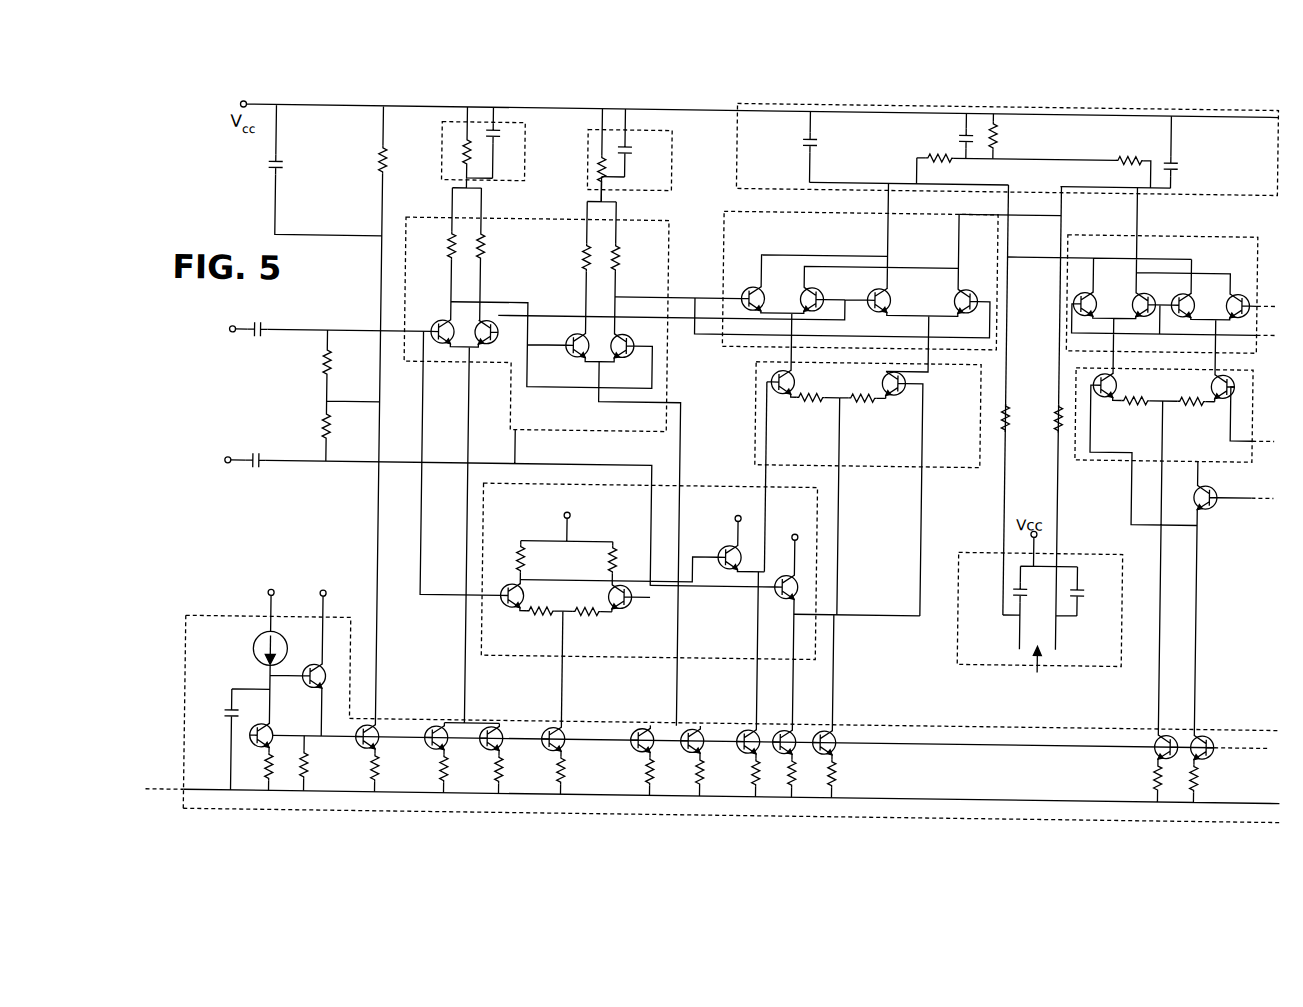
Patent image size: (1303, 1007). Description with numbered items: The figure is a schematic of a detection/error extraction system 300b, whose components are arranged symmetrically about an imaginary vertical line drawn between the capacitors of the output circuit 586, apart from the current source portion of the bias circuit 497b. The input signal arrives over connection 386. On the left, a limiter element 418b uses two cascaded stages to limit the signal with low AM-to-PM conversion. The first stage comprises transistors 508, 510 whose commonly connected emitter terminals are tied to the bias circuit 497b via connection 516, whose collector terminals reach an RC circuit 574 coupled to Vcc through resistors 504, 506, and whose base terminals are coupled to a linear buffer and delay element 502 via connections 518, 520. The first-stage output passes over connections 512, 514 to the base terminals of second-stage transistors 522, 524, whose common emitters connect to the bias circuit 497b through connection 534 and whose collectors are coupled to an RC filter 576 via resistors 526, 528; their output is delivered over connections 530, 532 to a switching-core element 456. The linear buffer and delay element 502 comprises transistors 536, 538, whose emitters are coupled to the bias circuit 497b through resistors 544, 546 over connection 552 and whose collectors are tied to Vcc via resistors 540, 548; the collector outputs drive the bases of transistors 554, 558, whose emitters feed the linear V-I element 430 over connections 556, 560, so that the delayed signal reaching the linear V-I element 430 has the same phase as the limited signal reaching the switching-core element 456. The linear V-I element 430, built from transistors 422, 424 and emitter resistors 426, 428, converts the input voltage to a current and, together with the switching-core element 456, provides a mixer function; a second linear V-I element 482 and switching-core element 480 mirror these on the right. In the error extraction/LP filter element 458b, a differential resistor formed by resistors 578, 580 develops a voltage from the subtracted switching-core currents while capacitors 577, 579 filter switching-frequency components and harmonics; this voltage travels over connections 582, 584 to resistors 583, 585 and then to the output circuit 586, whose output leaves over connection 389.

The detection/error extraction system 300b is at (200, 141).
The connection 386 is at (255, 406).
The limiter element 418b is at (545, 273).
The resistor 504 is at (446, 243).
The resistor 506 is at (482, 243).
The transistor 508 is at (436, 323).
The transistor 510 is at (483, 323).
The connection 512 is at (528, 300).
The connection 514 is at (533, 330).
The connection 516 is at (466, 484).
The connection 518 is at (422, 430).
The connection 520 is at (514, 466).
The transistor 522 is at (563, 358).
The transistor 524 is at (617, 360).
The resistor 526 is at (590, 257).
The resistor 528 is at (620, 265).
The connection 530 is at (660, 298).
The connection 532 is at (673, 318).
The connection 534 is at (682, 452).
The RC circuit 574 is at (524, 164).
The RC filter 576 is at (670, 172).
The switching-core element 456 is at (874, 238).
The error extraction/LP filter element 458b is at (1262, 169).
The capacitor 577 is at (801, 133).
The resistor 578 is at (930, 155).
The capacitor 579 is at (1162, 153).
The resistor 580 is at (1119, 149).
The connection 582 is at (1006, 272).
The connection 584 is at (1056, 373).
The resistor 583 is at (1052, 420).
The resistor 585 is at (1010, 417).
The linear V-I element 430 is at (956, 453).
The transistor 422 is at (776, 370).
The transistor 424 is at (922, 378).
The resistor 426 is at (818, 403).
The resistor 428 is at (870, 405).
The linear buffer & delay element 502 is at (625, 510).
The resistor 540 is at (521, 570).
The resistor 548 is at (612, 563).
The transistor 536 is at (506, 610).
The transistor 538 is at (622, 608).
The resistor 544 is at (540, 620).
The resistor 546 is at (590, 620).
The connection 552 is at (565, 702).
The transistor 554 is at (737, 575).
The connection 556 is at (765, 476).
The transistor 558 is at (773, 598).
The connection 560 is at (859, 616).
The switching-core element 480 is at (1223, 253).
The linear V-I element 482 is at (1223, 438).
The output circuit 586 is at (998, 655).
The connection 389 is at (1033, 686).
The bias circuit 497b is at (239, 675).